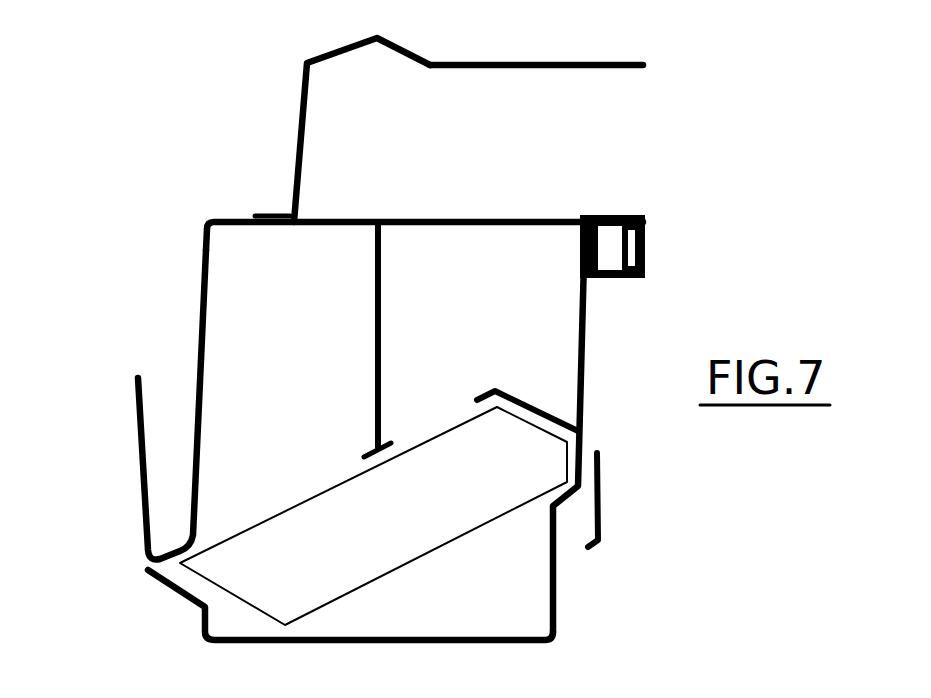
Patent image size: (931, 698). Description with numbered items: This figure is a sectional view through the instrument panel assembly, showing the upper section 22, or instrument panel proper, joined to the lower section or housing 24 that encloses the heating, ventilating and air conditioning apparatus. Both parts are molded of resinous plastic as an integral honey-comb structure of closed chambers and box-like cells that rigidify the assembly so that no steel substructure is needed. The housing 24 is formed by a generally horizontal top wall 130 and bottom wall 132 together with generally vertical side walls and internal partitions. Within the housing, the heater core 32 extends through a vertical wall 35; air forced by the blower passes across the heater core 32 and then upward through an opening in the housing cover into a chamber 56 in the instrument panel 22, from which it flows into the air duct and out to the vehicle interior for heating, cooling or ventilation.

The upper section 22 is at (283, 121).
The housing 24 is at (188, 414).
The heater core 32 is at (428, 542).
The vertical wall 35 is at (385, 330).
The chamber 56 is at (500, 78).
The top wall 130 is at (232, 220).
The bottom wall 132 is at (500, 637).